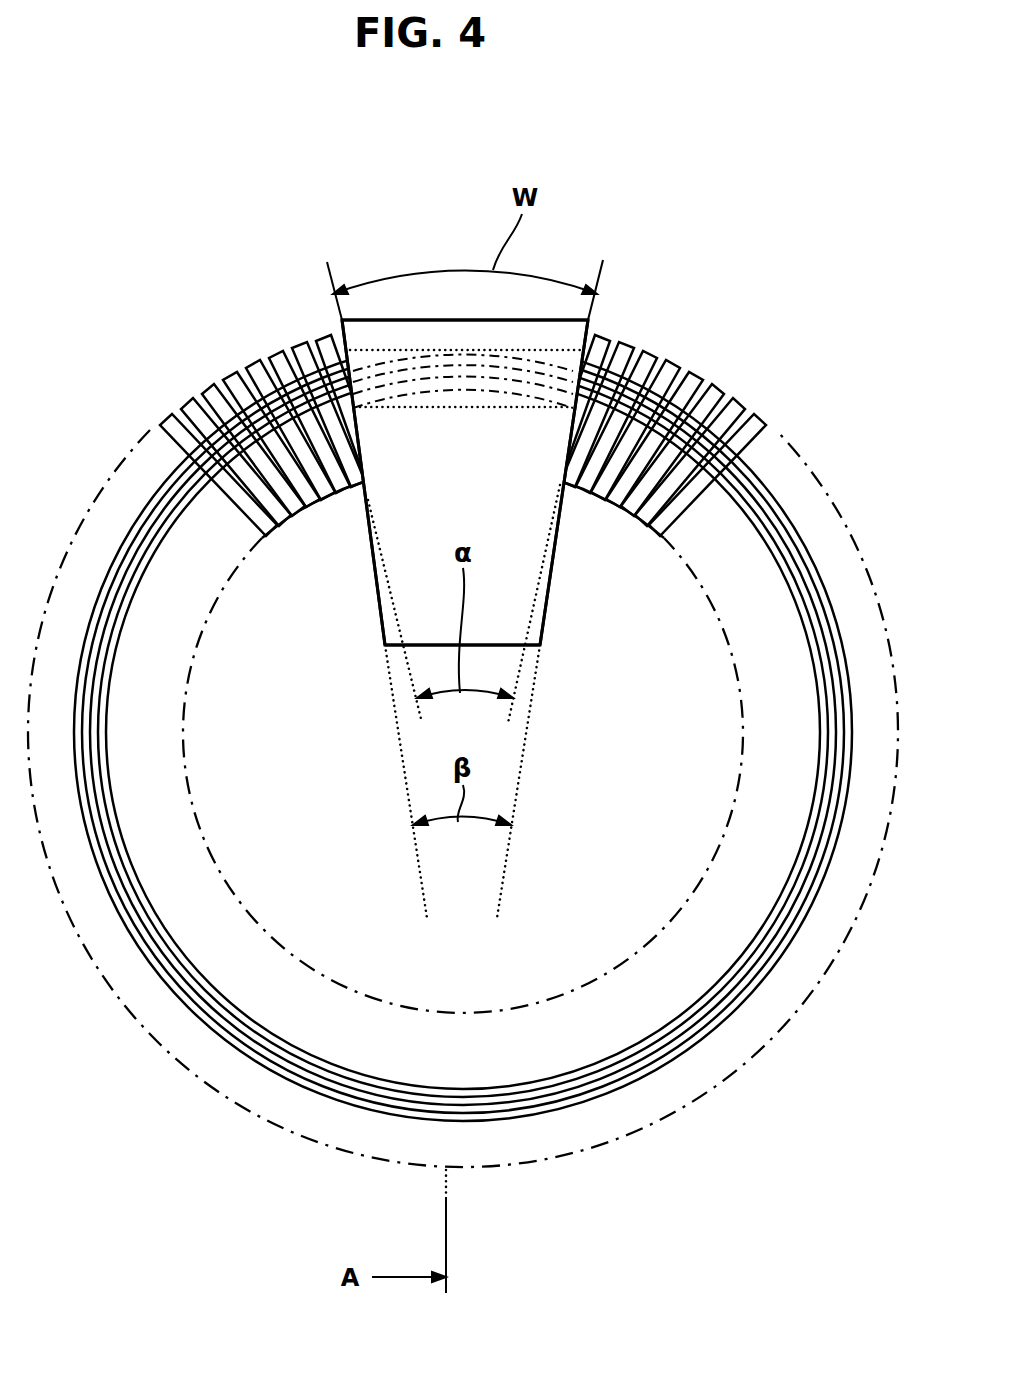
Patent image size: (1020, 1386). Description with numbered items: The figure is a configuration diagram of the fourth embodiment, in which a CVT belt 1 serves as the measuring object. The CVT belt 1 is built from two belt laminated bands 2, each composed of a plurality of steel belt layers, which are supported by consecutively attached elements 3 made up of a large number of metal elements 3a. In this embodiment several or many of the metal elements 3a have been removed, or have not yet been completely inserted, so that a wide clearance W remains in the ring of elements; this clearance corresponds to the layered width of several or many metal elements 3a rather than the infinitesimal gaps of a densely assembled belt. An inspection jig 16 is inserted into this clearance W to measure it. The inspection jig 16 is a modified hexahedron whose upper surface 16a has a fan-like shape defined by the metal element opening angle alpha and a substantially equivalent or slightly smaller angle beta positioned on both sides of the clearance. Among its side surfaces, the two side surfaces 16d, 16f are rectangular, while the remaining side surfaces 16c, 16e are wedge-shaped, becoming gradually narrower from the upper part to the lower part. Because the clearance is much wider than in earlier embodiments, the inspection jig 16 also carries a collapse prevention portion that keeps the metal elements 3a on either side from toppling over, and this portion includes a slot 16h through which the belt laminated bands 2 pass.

The CVT belt 1 is at (795, 361).
The belt laminated band 2 is at (655, 357).
The consecutively attached elements 3 is at (225, 247).
The metal element 3a is at (298, 340).
The inspection jig 16 is at (464, 483).
The upper surface 16a is at (505, 583).
The side surface 16c is at (392, 320).
The side surface 16d is at (368, 525).
The side surface 16e is at (493, 648).
The side surface 16f is at (558, 540).
The slot 16h is at (426, 401).